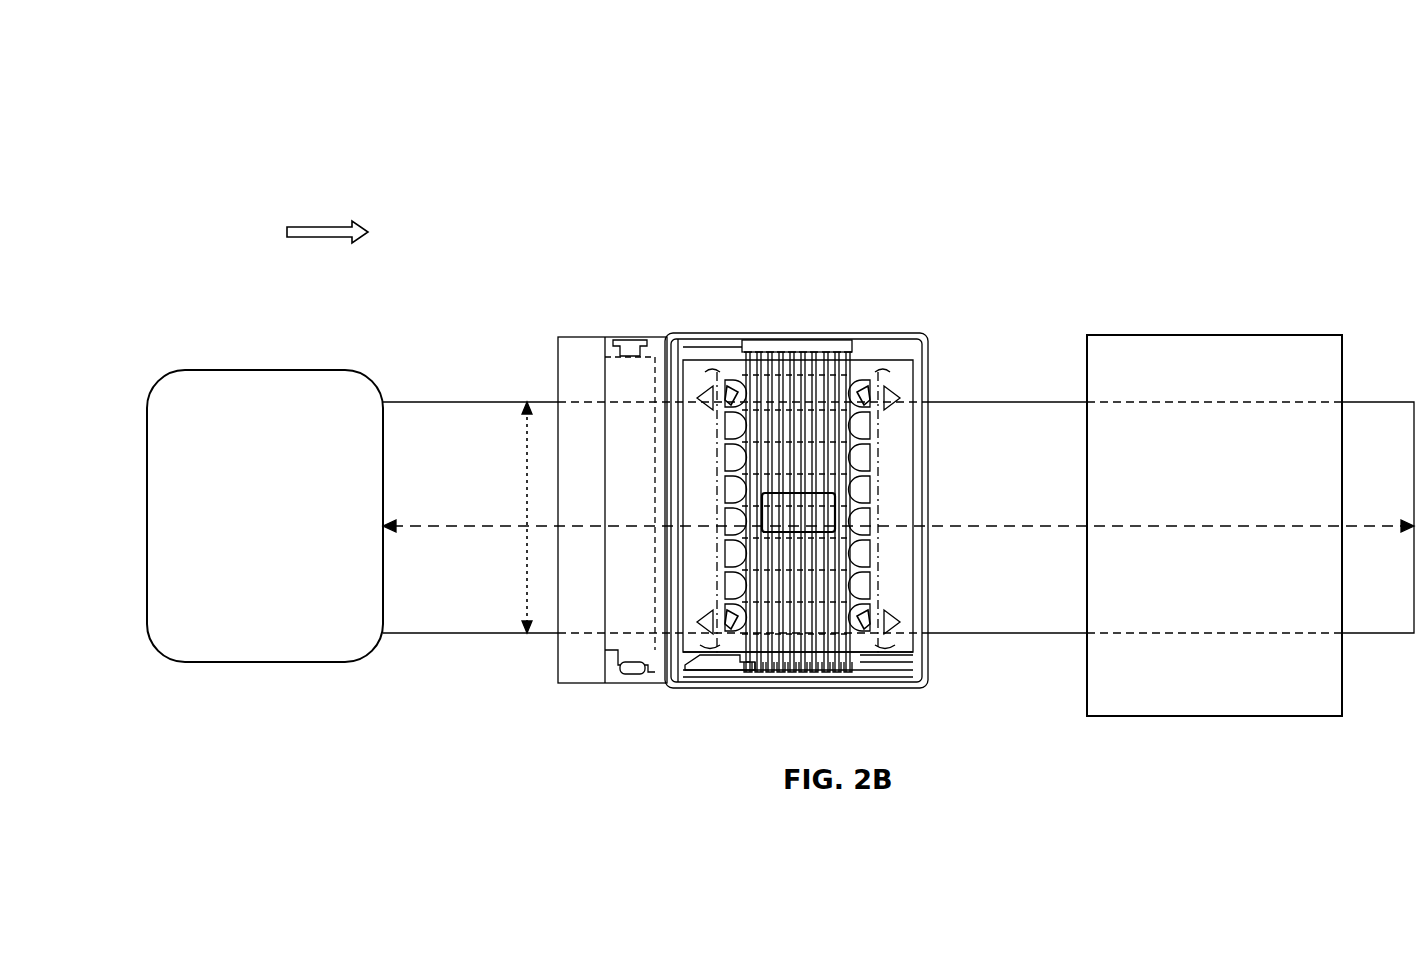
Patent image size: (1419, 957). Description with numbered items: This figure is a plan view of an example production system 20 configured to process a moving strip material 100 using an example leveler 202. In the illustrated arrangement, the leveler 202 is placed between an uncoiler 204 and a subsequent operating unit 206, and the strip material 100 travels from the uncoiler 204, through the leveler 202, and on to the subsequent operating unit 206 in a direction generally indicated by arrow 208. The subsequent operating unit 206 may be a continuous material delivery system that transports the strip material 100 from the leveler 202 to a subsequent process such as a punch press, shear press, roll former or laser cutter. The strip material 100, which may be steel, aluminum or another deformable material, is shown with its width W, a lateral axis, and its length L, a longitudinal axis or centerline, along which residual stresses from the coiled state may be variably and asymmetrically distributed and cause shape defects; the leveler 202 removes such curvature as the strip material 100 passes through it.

The production system 20 is at (226, 78).
The strip material 100 is at (472, 402).
The length L is at (446, 524).
The width W is at (526, 548).
The leveler 202 is at (860, 697).
The uncoiler 204 is at (240, 354).
The subsequent operating unit 206 is at (1237, 302).
The arrow 208 is at (318, 226).